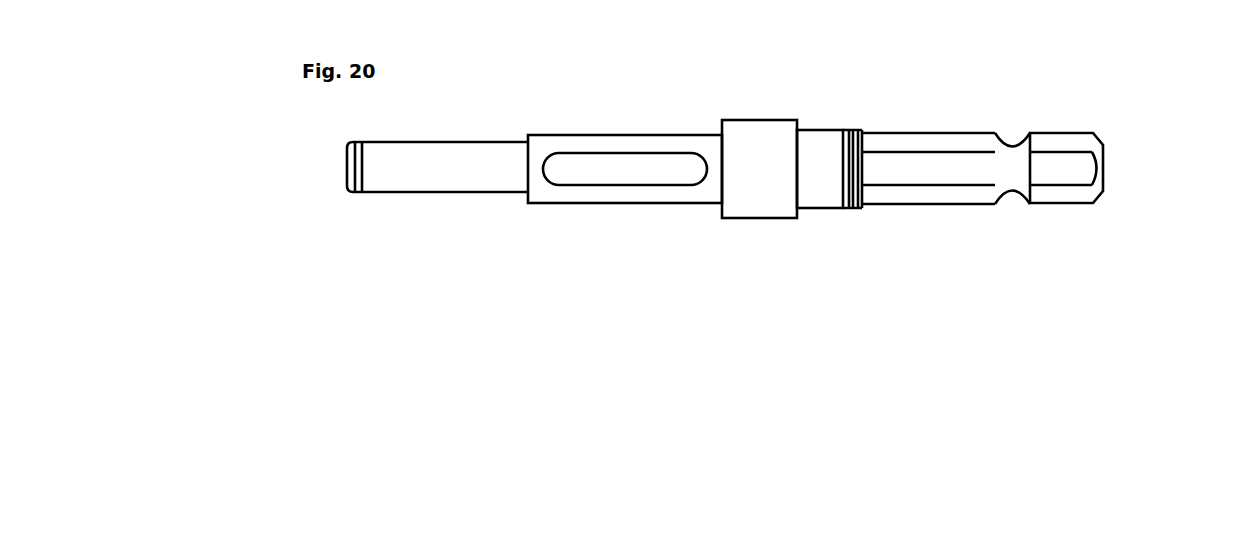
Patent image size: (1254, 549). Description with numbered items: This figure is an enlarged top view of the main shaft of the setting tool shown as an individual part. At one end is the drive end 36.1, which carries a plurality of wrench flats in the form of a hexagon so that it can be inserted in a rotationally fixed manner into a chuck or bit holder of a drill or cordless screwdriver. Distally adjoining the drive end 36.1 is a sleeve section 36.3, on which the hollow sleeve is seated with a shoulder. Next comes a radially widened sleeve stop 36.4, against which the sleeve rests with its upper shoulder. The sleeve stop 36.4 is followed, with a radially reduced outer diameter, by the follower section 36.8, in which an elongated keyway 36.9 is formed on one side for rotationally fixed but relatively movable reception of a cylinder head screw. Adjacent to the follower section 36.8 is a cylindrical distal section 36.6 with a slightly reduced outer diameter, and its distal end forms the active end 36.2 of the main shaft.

The drive end 36.1 is at (1105, 168).
The active end 36.2 is at (347, 167).
The sleeve section 36.3 is at (822, 138).
The sleeve stop 36.4 is at (743, 135).
The distal section 36.6 is at (407, 155).
The follower section 36.8 is at (625, 162).
The elongated keyway 36.9 is at (638, 167).